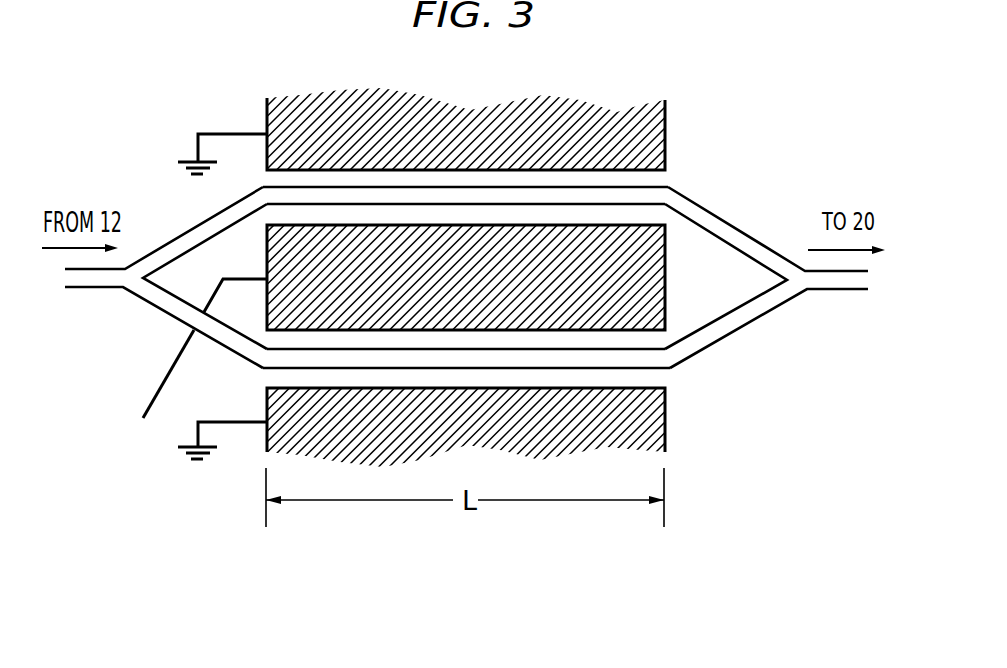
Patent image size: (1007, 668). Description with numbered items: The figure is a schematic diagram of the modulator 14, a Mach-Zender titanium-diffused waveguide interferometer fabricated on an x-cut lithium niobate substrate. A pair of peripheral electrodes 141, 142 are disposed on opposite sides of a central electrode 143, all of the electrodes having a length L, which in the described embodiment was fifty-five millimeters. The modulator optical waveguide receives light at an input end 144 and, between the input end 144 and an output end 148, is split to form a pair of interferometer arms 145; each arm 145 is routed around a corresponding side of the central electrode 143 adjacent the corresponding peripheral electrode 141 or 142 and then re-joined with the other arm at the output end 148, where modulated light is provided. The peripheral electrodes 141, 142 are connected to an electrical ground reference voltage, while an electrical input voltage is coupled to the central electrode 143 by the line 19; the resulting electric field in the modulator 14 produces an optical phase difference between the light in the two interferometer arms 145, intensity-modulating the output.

The modulator 14 is at (690, 112).
The electrical signal line 19 is at (163, 382).
The peripheral electrode 141 is at (667, 407).
The peripheral electrode 142 is at (667, 150).
The central electrode 143 is at (667, 303).
The input end 144 is at (102, 281).
The interferometer arms 145 is at (757, 252).
The output end 148 is at (838, 282).